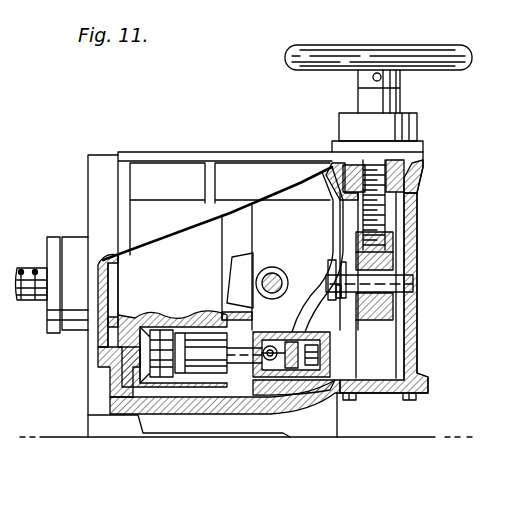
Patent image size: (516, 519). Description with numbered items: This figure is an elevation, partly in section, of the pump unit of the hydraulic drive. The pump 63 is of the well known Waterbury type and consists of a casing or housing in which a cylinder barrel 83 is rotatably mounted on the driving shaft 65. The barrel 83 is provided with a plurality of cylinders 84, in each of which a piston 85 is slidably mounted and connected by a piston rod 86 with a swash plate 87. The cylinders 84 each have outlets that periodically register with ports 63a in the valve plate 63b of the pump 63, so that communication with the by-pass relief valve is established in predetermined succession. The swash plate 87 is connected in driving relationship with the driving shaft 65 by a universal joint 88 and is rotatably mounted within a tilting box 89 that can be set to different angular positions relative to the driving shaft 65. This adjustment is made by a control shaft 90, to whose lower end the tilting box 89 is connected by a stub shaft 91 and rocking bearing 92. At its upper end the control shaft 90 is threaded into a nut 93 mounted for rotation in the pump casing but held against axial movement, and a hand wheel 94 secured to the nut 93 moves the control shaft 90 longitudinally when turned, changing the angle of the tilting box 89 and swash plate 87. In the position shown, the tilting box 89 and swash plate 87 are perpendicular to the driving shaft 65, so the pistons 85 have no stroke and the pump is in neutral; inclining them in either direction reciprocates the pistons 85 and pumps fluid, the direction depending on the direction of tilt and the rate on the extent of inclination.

The pump 63 is at (178, 155).
The ports 63a is at (117, 353).
The valve plate 63b is at (88, 190).
The driving shaft 65 is at (338, 293).
The cylinder barrel 83 is at (217, 224).
The cylinders 84 is at (163, 363).
The piston 85 is at (202, 353).
The piston rod 86 is at (245, 360).
The swash plate 87 is at (293, 367).
The universal joint 88 is at (247, 272).
The tilting box 89 is at (282, 249).
The control shaft 90 is at (392, 247).
The stub shaft 91 is at (384, 282).
The rocking bearing 92 is at (389, 270).
The nut 93 is at (408, 173).
The hand wheel 94 is at (448, 48).